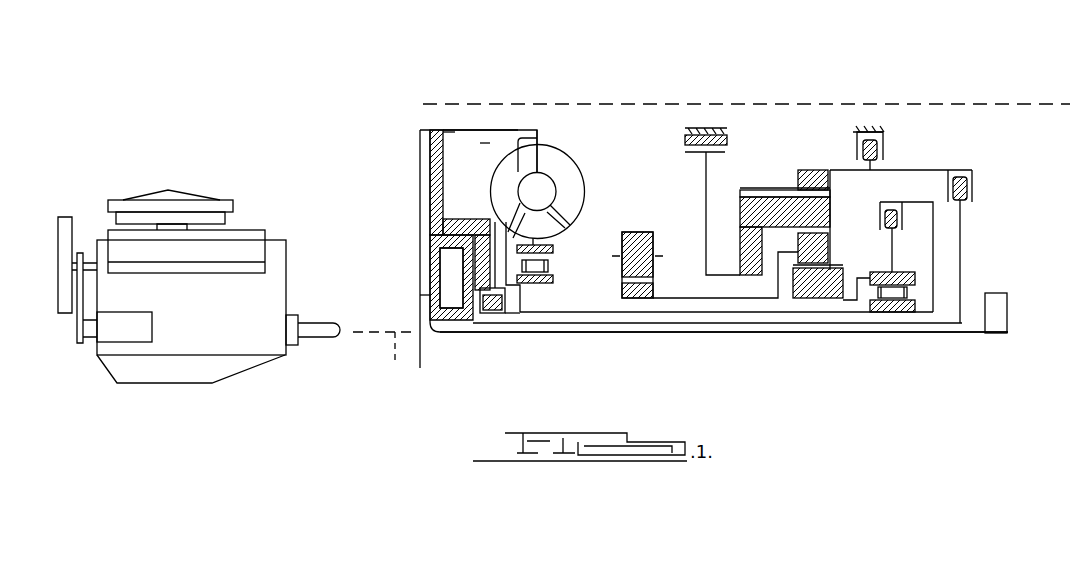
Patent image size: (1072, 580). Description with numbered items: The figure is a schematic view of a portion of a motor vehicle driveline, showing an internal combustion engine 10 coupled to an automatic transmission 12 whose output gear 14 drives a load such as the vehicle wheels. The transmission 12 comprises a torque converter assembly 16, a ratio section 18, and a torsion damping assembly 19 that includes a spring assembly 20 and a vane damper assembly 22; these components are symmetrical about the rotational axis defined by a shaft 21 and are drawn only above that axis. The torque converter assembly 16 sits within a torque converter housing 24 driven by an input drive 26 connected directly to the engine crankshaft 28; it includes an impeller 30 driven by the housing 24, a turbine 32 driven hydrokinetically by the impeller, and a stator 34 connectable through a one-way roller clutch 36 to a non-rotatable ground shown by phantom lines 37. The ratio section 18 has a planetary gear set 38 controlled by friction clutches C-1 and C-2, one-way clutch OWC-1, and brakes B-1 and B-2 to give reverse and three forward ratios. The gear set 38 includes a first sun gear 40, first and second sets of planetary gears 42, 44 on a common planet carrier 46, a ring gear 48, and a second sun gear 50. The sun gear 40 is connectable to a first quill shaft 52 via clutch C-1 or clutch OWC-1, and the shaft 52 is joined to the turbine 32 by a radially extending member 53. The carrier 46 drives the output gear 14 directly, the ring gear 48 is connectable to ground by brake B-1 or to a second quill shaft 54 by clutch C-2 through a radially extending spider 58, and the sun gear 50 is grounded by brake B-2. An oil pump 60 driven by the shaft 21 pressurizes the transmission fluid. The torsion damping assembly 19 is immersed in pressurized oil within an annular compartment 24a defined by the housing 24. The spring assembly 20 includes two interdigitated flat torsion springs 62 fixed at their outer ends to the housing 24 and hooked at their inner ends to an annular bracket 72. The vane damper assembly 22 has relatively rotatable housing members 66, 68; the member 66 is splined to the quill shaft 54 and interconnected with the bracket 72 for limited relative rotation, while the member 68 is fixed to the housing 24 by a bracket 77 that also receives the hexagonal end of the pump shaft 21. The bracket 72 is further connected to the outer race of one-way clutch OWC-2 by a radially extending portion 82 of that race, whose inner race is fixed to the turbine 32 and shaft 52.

The internal combustion engine 10 is at (256, 196).
The automatic transmission 12 is at (727, 84).
The output gear 14 is at (640, 230).
The torque converter assembly 16 is at (477, 119).
The ratio section 18 is at (777, 139).
The torsion damping assembly 19 is at (455, 150).
The spring assembly 20 is at (453, 129).
The shaft 21 is at (725, 334).
The vane damper assembly 22 is at (431, 270).
The torque converter housing 24 is at (521, 130).
The annular compartment 24a is at (483, 143).
The input drive 26 is at (392, 349).
The crankshaft 28 is at (327, 341).
The impeller 30 is at (585, 179).
The turbine 32 is at (538, 138).
The stator 34 is at (553, 247).
The one-way roller clutch 36 is at (548, 270).
The phantom lines 37 is at (908, 100).
The planetary gear set 38 is at (770, 163).
The first sun gear 40 is at (793, 287).
The first set of planetary gears 42 is at (833, 200).
The second set of planetary gears 44 is at (830, 258).
The common planet carrier 46 is at (857, 208).
The ring gear 48 is at (808, 170).
The second sun gear 50 is at (740, 243).
The first quill shaft 52 is at (840, 313).
The radially extending member 53 is at (527, 290).
The second quill shaft 54 is at (628, 334).
The radially extending flange or spider 58 is at (962, 243).
The oil pump 60 is at (1008, 302).
The torsion springs 62 is at (430, 156).
The first housing member 66 is at (434, 242).
The second housing member 68 is at (430, 289).
The annular bracket 72 is at (469, 216).
The bracket 77 is at (427, 327).
The radially extending portion 82 is at (490, 219).
The brake B-1 is at (877, 147).
The brake B-2 is at (683, 140).
The friction clutch C-1 is at (898, 222).
The friction clutch C-2 is at (967, 187).
The one-way clutch OWC-1 is at (912, 290).
The one-way clutch OWC-2 is at (522, 302).